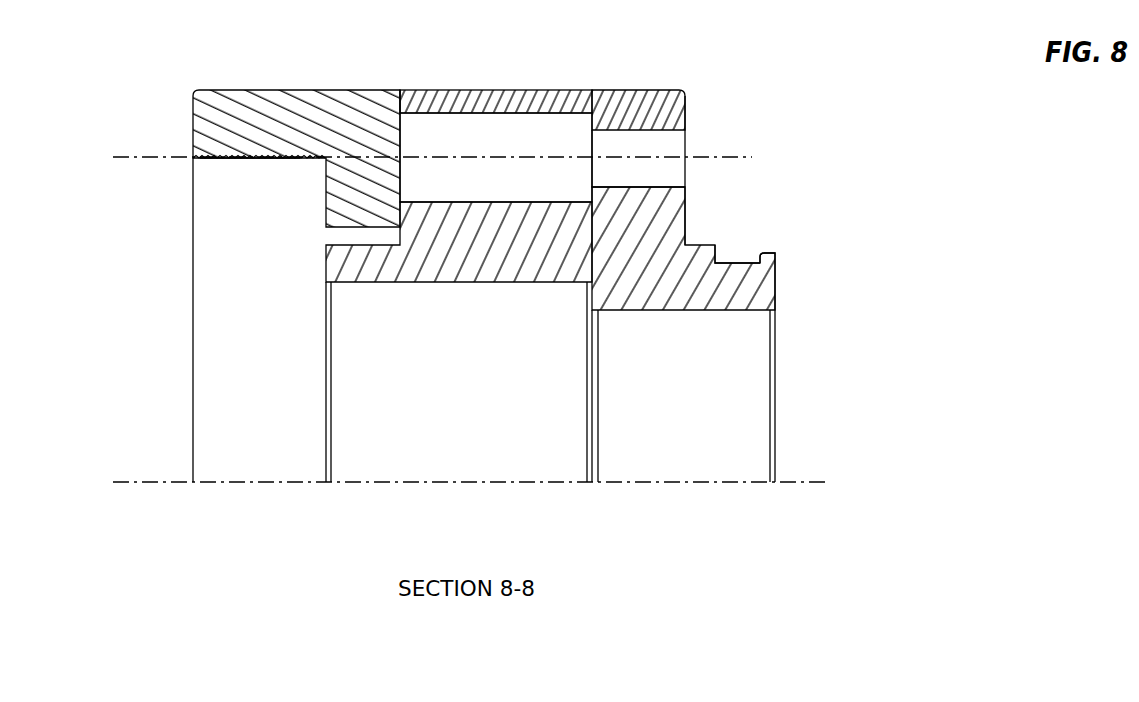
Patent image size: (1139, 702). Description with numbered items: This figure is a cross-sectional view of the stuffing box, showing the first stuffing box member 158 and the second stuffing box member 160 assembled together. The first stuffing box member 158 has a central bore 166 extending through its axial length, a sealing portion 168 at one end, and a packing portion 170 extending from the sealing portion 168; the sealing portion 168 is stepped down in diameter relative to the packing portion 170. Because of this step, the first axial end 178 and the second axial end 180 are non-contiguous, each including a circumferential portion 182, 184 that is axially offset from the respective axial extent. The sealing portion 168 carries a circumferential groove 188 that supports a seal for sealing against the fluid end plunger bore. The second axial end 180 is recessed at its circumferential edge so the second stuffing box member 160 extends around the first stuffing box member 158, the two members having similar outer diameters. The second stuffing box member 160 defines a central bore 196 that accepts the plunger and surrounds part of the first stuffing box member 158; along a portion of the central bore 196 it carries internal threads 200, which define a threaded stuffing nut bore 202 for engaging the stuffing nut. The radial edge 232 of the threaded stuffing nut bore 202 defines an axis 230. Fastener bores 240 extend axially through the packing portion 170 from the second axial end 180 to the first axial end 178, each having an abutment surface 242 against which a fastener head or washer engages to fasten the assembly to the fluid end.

The first stuffing box member 158 is at (622, 90).
The second stuffing box member 160 is at (225, 95).
The central bore 166 is at (710, 311).
The sealing portion 168 is at (771, 281).
The packing portion 170 is at (485, 92).
The first axial end 178 is at (727, 261).
The second axial end 180 is at (300, 272).
The circumferential portion 182 is at (686, 119).
The circumferential portion 184 is at (398, 104).
The circumferential groove 188 is at (742, 262).
The central bore 196 is at (224, 263).
The internal threads 200 is at (228, 158).
The threaded stuffing nut bore 202 is at (221, 362).
The axis 230 is at (168, 162).
The radial edge 232 is at (277, 158).
The fastener bores 240 is at (535, 125).
The abutment surface 242 is at (592, 193).